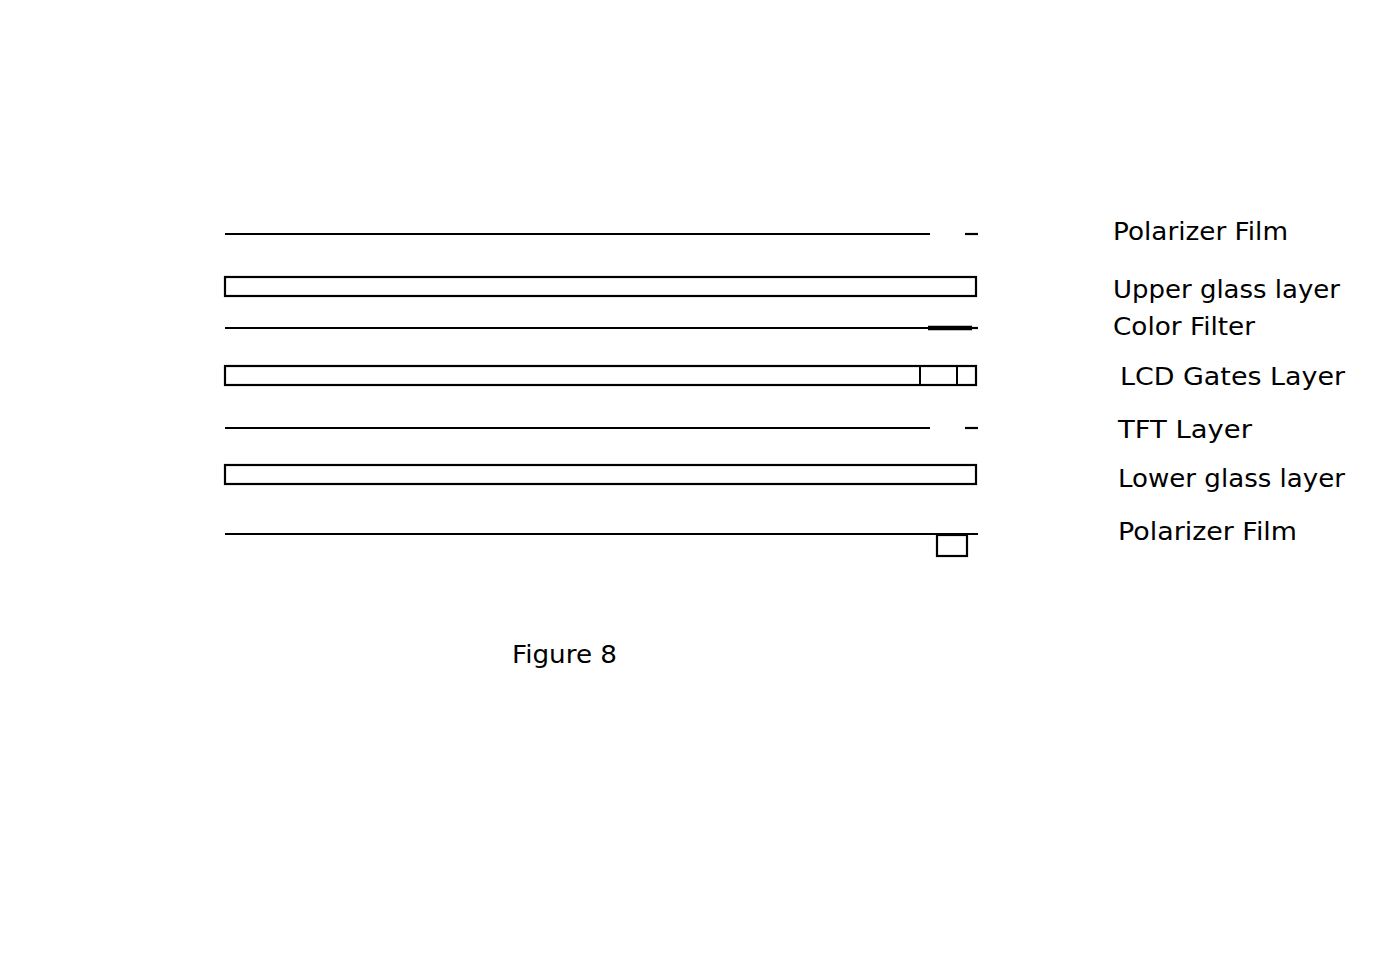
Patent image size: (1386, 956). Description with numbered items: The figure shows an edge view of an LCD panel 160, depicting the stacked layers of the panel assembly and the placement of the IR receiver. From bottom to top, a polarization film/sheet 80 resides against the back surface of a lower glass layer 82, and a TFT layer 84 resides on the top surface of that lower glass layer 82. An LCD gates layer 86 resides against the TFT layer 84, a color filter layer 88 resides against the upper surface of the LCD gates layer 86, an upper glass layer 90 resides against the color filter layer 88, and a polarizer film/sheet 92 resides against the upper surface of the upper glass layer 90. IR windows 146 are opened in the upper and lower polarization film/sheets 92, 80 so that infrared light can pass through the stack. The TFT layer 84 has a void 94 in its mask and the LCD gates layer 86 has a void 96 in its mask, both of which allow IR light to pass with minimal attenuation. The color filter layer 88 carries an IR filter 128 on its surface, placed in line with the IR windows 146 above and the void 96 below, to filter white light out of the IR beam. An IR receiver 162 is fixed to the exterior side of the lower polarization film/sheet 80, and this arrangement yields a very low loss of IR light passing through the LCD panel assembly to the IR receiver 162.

The edge view of LCD panel 160 is at (524, 122).
The polarizer film/sheet 92 is at (984, 234).
The IR windows 146 is at (946, 229).
The upper glass layer 90 is at (218, 286).
The color filter layer 88 is at (984, 328).
The IR filter 128 is at (943, 323).
The LCD gates layer 86 is at (218, 375).
The void 96 is at (940, 361).
The TFT layer 84 is at (984, 428).
The void 94 is at (946, 423).
The lower glass layer 82 is at (218, 472).
The polarization film/sheet 80 is at (986, 534).
The IR receiver 162 is at (948, 563).